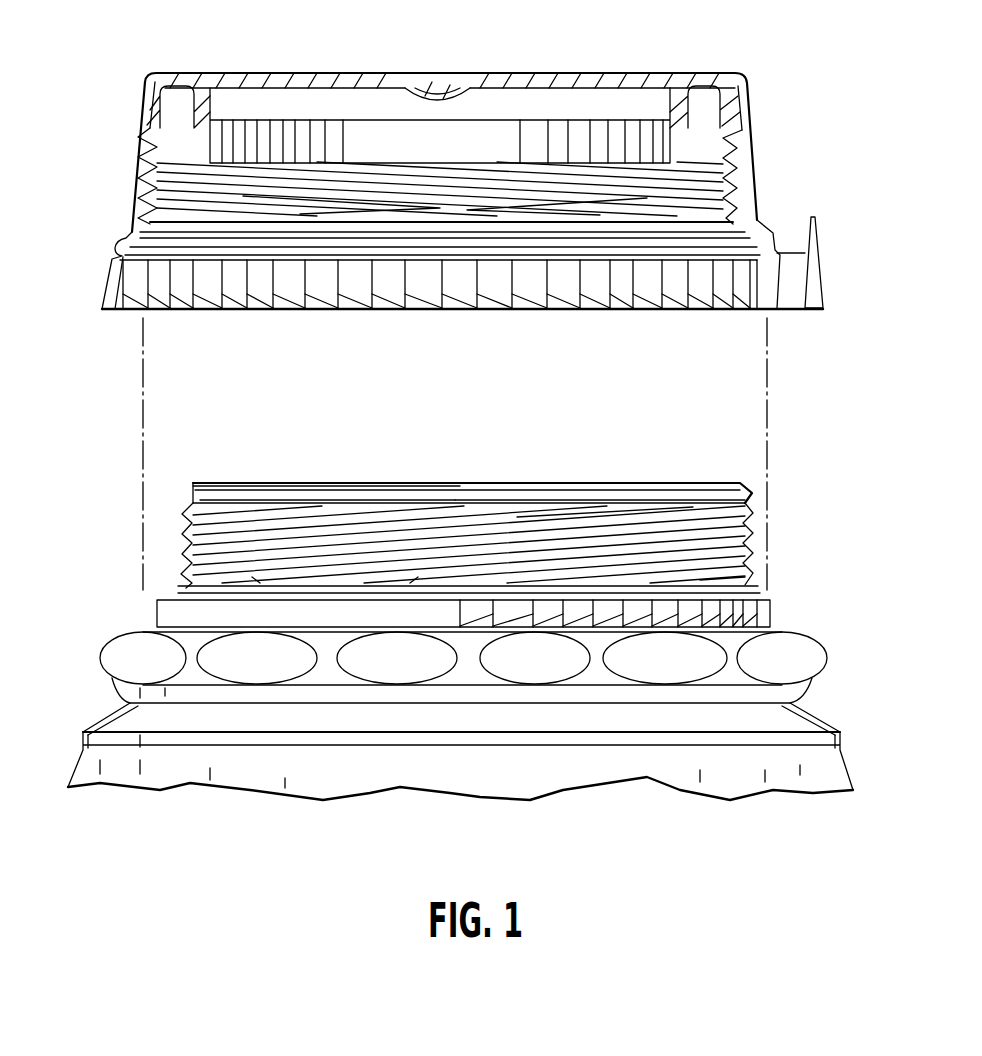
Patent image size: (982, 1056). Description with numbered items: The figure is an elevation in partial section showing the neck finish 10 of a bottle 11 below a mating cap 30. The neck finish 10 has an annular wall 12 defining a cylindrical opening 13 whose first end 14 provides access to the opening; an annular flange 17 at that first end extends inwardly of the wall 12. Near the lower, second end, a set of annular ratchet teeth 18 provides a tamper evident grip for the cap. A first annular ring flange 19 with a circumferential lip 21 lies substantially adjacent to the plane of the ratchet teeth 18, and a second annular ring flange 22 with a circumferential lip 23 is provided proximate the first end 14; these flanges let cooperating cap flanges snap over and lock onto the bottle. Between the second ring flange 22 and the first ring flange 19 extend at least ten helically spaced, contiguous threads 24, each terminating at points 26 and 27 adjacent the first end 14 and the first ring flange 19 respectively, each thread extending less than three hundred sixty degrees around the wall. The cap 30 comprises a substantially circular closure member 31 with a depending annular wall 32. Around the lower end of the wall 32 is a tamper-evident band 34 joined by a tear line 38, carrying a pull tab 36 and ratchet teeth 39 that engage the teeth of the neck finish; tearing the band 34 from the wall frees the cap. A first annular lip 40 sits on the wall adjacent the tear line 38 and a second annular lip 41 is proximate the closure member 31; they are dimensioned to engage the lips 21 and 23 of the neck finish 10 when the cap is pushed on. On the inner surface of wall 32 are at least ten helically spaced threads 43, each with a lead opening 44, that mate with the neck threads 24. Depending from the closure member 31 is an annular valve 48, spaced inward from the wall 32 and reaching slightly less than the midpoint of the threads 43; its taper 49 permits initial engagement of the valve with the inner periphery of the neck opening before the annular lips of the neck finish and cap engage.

The neck finish 10 is at (756, 521).
The bottle 11 is at (820, 714).
The annular wall 12 is at (758, 575).
The cylindrical opening 13 is at (454, 478).
The first end 14 is at (703, 478).
The annular flange 17 is at (204, 482).
The annular ratchet teeth 18 is at (758, 610).
The first annular ring flange 19 is at (180, 586).
The circumferential lip 21 is at (180, 593).
The second annular ring flange 22 is at (190, 500).
The circumferential lip 23 is at (190, 507).
The threads 24 is at (752, 553).
The terminating point 26 is at (693, 507).
The terminating point 27 is at (418, 577).
The cap 30 is at (763, 84).
The closure member 31 is at (556, 72).
The annular wall 32 is at (738, 153).
The tamper-evident band 34 is at (763, 303).
The pull tab 36 is at (828, 246).
The tear line 38 is at (757, 227).
The ratchet teeth 39 is at (680, 302).
The first annular lip 40 is at (112, 246).
The second annular lip 41 is at (147, 130).
The threads 43 is at (140, 202).
The lead opening 44 is at (645, 205).
The annular valve 48 is at (673, 158).
The taper 49 is at (205, 140).